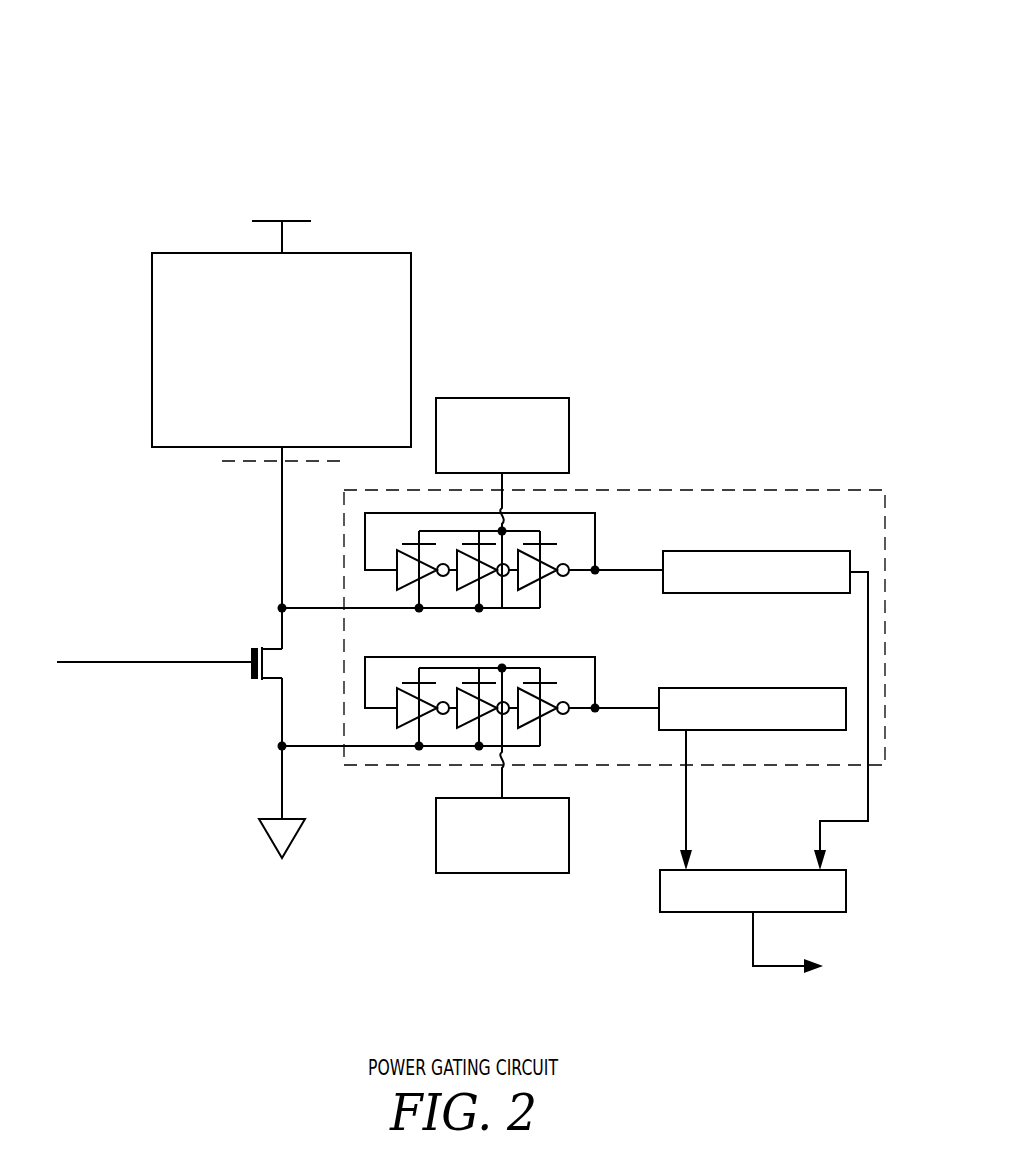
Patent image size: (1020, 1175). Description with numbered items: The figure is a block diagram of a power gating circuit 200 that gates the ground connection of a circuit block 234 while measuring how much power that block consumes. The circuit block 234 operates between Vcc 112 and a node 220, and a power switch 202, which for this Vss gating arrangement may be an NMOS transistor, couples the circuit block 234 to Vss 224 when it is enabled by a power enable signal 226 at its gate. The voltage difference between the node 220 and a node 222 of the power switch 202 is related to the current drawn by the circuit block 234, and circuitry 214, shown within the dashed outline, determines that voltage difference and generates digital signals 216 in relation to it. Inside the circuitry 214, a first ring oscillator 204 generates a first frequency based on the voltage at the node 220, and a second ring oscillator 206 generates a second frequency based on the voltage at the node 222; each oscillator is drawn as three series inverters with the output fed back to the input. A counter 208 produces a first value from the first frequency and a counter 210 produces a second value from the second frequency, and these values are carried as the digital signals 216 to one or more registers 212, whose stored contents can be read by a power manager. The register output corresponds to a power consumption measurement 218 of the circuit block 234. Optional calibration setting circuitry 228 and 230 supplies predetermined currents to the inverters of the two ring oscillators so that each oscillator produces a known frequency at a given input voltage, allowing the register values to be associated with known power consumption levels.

The power gating circuit 200 is at (127, 50).
The Vcc 112 is at (266, 220).
The circuit block 234 is at (166, 253).
The power switch 202 is at (259, 681).
The power enable signal 226 is at (108, 664).
The node 220 is at (282, 608).
The node 222 is at (282, 746).
The Vss 224 is at (292, 838).
The first ring oscillator 204 is at (549, 578).
The second ring oscillator 206 is at (572, 716).
The calibration setting circuitry 228 is at (552, 398).
The calibration setting circuitry 230 is at (548, 873).
The circuitry 214 is at (862, 490).
The counter 208 is at (820, 551).
The counter 210 is at (807, 688).
The digital signals 216 is at (688, 801).
The registers 212 is at (848, 892).
The power consumption measurement 218 is at (772, 968).